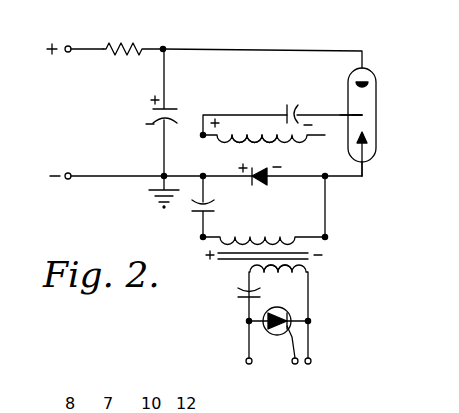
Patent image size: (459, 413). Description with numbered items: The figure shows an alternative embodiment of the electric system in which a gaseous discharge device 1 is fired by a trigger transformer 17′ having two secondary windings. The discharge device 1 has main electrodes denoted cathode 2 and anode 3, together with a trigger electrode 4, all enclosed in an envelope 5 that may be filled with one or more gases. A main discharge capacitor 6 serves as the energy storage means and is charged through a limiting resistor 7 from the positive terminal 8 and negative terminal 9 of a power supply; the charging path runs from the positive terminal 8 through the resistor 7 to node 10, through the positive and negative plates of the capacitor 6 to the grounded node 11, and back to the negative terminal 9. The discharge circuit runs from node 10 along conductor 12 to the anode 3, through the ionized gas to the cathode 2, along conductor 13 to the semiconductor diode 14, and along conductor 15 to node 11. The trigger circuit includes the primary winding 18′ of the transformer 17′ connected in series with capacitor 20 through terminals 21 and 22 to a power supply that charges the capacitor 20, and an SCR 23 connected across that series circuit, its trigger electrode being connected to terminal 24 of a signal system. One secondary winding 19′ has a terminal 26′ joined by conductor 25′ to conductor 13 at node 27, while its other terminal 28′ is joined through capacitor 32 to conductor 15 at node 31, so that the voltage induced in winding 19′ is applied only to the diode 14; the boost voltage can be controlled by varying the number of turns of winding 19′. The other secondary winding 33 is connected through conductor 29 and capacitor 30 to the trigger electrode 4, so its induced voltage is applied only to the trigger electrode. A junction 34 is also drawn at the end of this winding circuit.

The gaseous discharge device 1 is at (376, 116).
The cathode 2 is at (368, 139).
The anode 3 is at (366, 83).
The trigger electrode 4 is at (358, 115).
The envelope 5 is at (376, 152).
The main discharge capacitor 6 is at (152, 117).
The limiting resistor 7 is at (118, 44).
The positive terminal 8 is at (68, 45).
The negative terminal 9 is at (68, 172).
The node 10 is at (163, 46).
The node 11 is at (160, 174).
The conductor 12 is at (227, 49).
The conductor 13 is at (366, 175).
The semiconductor diode 14 is at (257, 183).
The conductor 15 is at (175, 171).
The trigger transformer 17′ is at (311, 263).
The primary winding 18′ is at (283, 273).
The secondary winding 19′ is at (290, 235).
The capacitor 20 is at (237, 293).
The terminal 21 is at (246, 361).
The terminal 22 is at (312, 361).
The SCR 23 is at (291, 312).
The terminal 24 is at (292, 361).
The conductor 25′ is at (327, 208).
The terminal 26′ is at (330, 238).
The node 27 is at (328, 180).
The terminal 28′ is at (200, 243).
The conductor 29 is at (231, 114).
The capacitor 30 is at (287, 108).
The node 31 is at (203, 173).
The capacitor 32 is at (219, 212).
The secondary winding 33 is at (268, 141).
The junction 34 is at (200, 135).